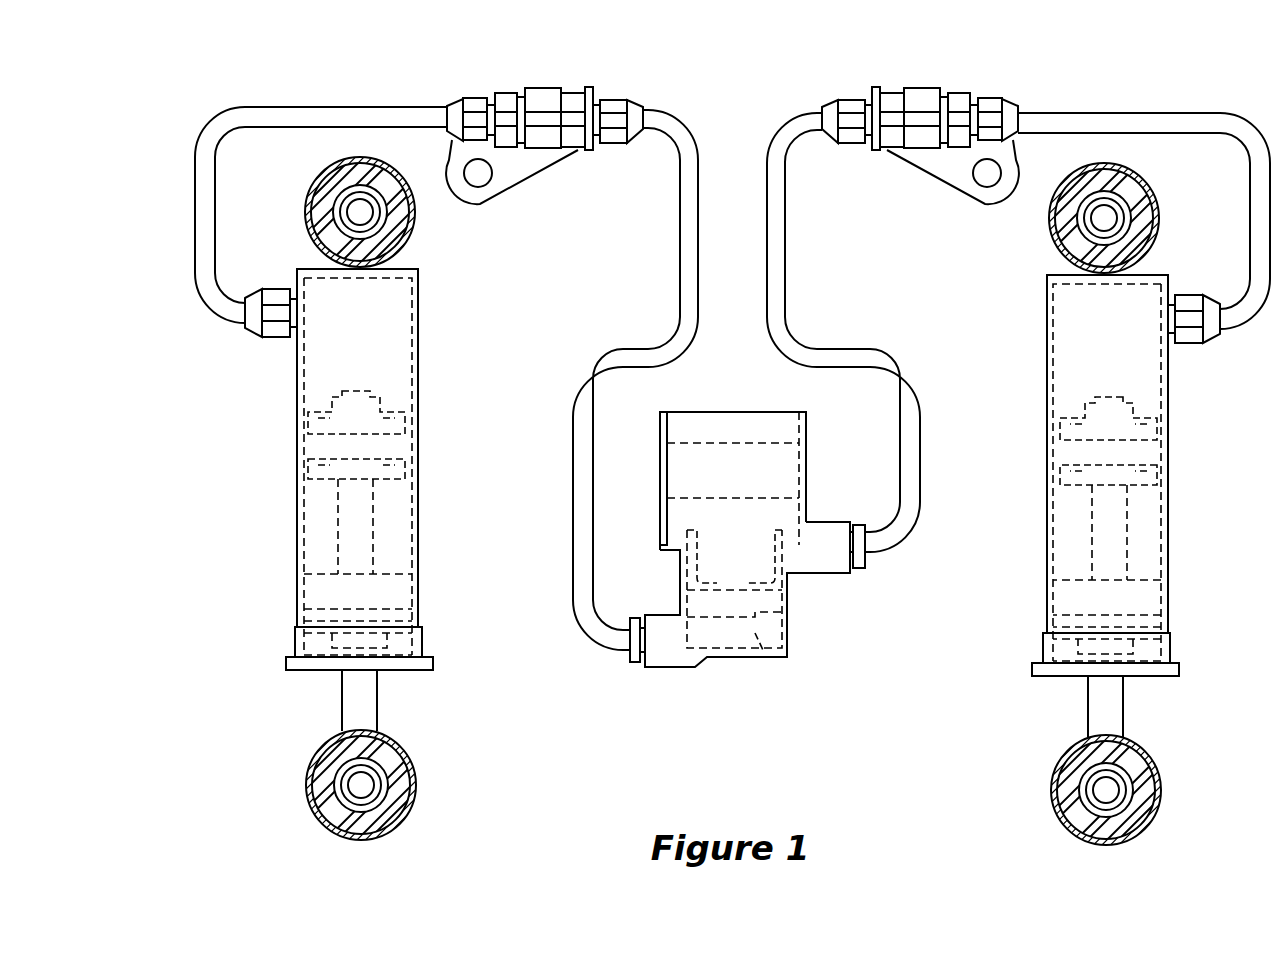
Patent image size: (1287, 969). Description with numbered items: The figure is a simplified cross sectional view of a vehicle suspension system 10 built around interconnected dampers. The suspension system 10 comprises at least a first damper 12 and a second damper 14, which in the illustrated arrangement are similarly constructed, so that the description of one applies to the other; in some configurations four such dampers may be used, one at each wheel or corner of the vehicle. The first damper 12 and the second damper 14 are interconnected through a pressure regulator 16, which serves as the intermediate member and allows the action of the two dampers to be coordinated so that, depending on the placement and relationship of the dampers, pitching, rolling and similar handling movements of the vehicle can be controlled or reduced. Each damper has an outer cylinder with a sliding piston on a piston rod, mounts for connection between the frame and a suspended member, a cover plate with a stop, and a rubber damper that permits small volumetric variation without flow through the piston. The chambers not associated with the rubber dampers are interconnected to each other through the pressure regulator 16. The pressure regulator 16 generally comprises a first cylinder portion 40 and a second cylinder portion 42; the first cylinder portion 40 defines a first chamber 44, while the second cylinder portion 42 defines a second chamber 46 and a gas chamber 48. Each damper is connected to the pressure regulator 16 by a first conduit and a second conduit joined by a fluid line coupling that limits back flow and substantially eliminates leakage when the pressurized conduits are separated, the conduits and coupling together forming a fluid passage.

The suspension system 10 is at (1083, 96).
The first damper 12 is at (295, 497).
The second damper 14 is at (1172, 487).
The pressure regulator 16 is at (716, 670).
The first cylinder portion 40 is at (786, 607).
The second cylinder portion 42 is at (808, 462).
The first chamber 44 is at (762, 665).
The second chamber 46 is at (675, 553).
The gas chamber 48 is at (682, 475).